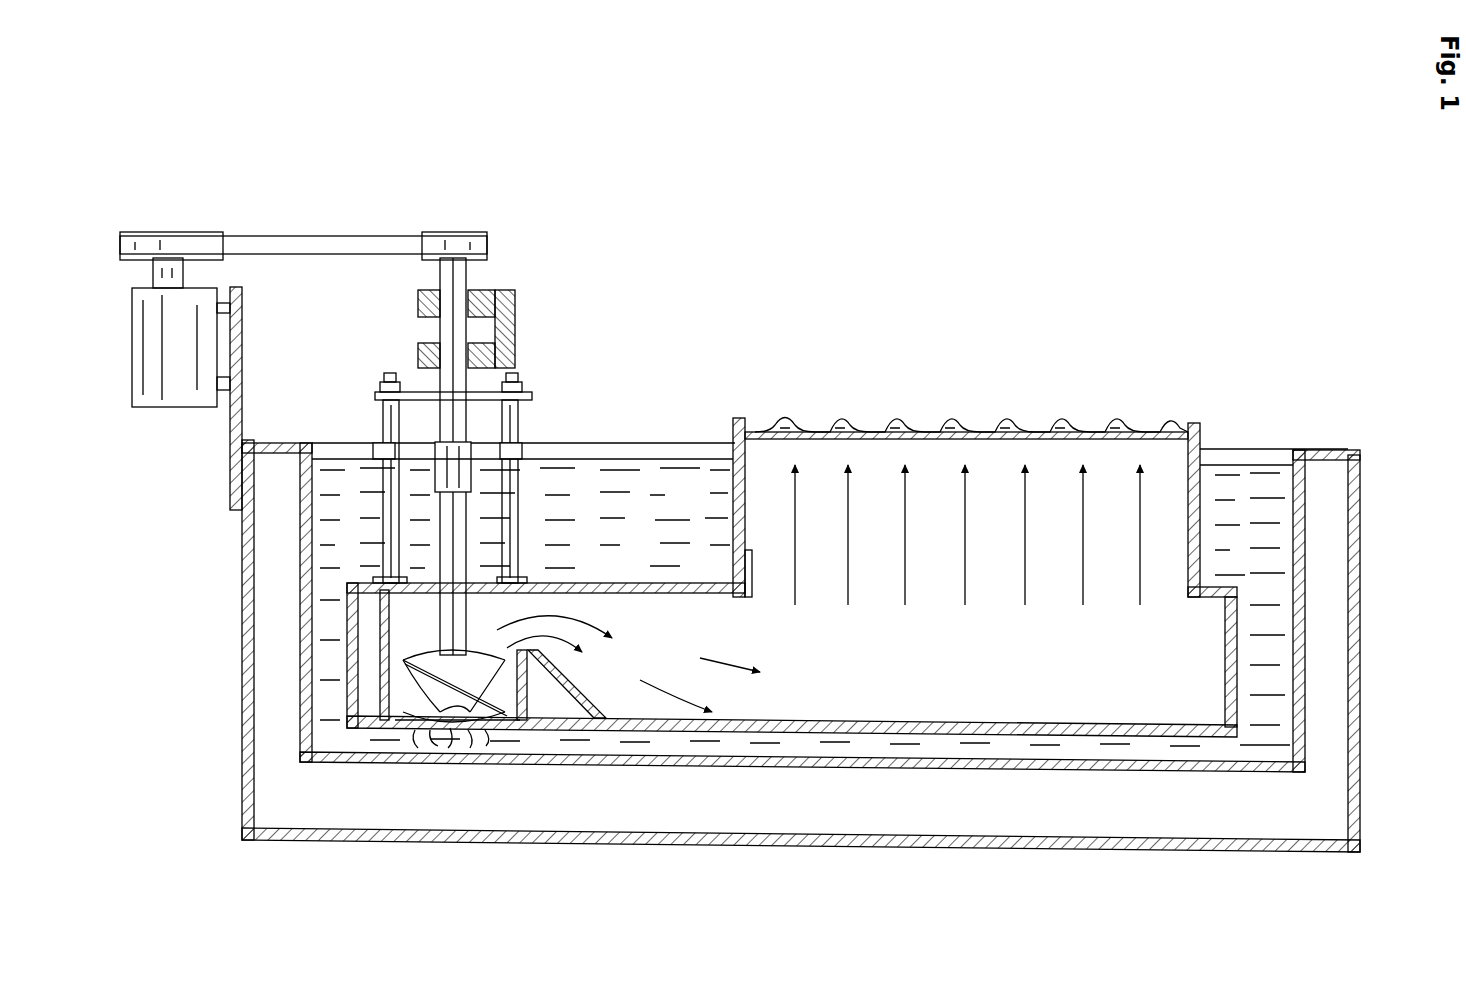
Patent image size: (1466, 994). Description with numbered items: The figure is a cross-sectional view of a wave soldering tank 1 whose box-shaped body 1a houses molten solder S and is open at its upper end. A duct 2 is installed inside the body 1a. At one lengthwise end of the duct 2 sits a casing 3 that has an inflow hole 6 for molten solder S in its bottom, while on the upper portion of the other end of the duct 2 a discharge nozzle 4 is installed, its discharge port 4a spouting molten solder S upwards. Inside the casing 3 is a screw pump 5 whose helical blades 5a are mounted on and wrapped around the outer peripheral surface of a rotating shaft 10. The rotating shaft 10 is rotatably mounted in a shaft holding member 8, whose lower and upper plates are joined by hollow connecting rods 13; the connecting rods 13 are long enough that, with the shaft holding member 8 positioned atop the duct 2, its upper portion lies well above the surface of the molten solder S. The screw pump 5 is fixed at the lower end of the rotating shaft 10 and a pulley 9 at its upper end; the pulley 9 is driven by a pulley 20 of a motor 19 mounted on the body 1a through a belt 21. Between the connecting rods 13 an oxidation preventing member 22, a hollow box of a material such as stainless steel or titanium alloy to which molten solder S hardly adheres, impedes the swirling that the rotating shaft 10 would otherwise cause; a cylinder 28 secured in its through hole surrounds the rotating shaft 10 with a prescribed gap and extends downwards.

The wave soldering tank 1 is at (868, 886).
The box-shaped body 1a is at (1362, 492).
The duct 2 is at (600, 583).
The casing 3 is at (528, 698).
The discharge nozzle 4 is at (733, 425).
The discharge port 4a is at (815, 430).
The screw pump 5 is at (398, 700).
The helical blades 5a is at (405, 722).
The inflow hole 6 is at (455, 745).
The shaft holding member 8 is at (555, 393).
The pulley 9 is at (458, 232).
The rotating shaft 10 is at (468, 276).
The connecting rods 13 is at (383, 415).
The motor 19 is at (180, 407).
The pulley of motor 20 is at (172, 232).
The belt 21 is at (328, 236).
The oxidation preventing member 22 is at (373, 448).
The cylinder 28 is at (435, 460).
The molten solder S is at (692, 501).